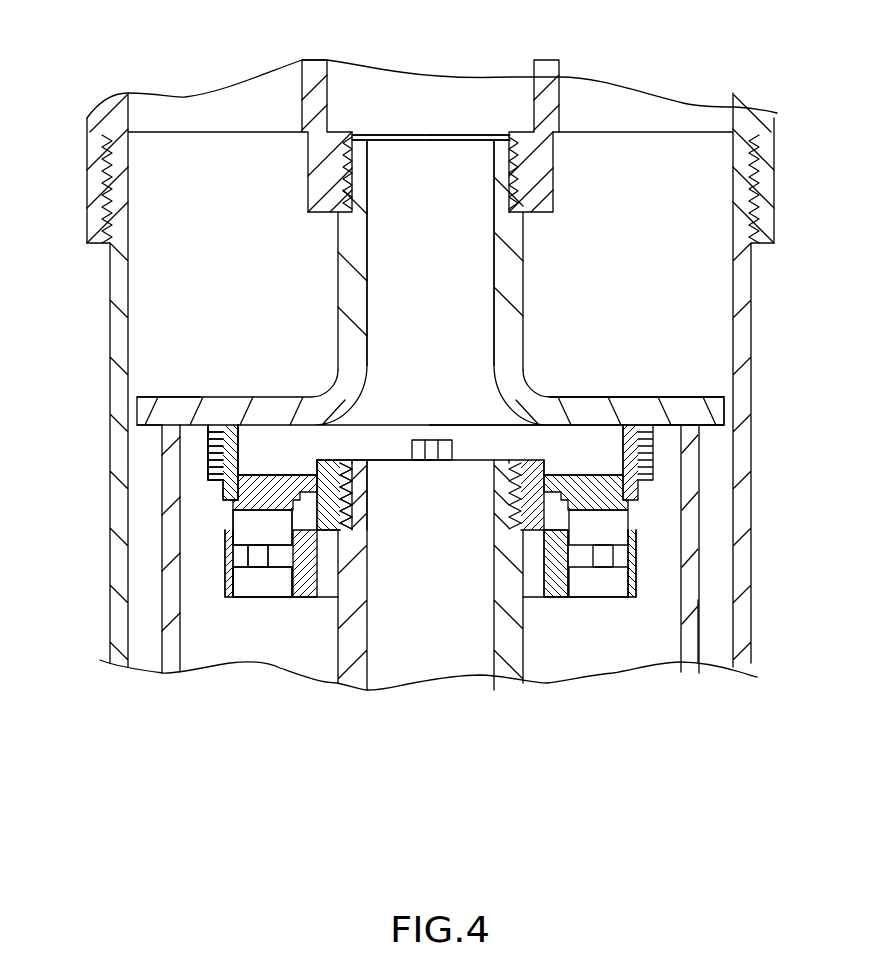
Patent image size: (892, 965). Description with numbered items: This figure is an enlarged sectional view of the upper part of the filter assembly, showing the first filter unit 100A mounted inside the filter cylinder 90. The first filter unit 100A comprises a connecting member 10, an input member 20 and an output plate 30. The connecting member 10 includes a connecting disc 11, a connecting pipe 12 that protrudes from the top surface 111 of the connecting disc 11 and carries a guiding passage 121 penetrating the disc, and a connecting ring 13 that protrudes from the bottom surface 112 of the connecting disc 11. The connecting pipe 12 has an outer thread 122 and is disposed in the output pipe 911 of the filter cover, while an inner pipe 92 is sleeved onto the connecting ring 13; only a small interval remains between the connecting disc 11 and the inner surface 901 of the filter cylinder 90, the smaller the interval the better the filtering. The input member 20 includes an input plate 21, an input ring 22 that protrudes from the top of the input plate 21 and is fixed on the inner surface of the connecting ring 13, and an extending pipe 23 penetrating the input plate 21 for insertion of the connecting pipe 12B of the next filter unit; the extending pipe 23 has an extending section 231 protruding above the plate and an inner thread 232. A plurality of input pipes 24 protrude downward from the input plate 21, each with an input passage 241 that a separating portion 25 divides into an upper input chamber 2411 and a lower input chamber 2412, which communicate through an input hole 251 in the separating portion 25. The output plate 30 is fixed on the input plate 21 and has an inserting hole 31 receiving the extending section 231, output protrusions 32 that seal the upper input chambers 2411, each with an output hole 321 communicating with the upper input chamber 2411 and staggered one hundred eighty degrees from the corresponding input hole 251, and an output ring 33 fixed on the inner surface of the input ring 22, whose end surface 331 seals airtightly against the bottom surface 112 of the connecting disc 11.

The connecting member 10 is at (557, 378).
The connecting disc 11 is at (690, 398).
The top surface 111 is at (633, 397).
The bottom surface 112 is at (713, 427).
The connecting pipe 12 is at (343, 232).
The guiding passage 121 is at (450, 168).
The outer thread 122 is at (382, 133).
The connecting pipe of another filter unit 12B is at (363, 492).
The connecting ring 13 is at (682, 468).
The input member 20 is at (214, 563).
The input plate 21 is at (243, 553).
The input ring 22 is at (215, 465).
The extending pipe 23 is at (323, 518).
The extending section 231 is at (337, 478).
The inner thread 232 is at (352, 468).
The input pipe 24 is at (238, 588).
The input passage 241 is at (193, 747).
The upper input chamber 2411 is at (273, 535).
The lower input chamber 2412 is at (250, 585).
The separating portion 25 is at (590, 565).
The input hole 251 is at (227, 538).
The output plate 30 is at (262, 462).
The inserting hole 31 is at (310, 478).
The output protrusion 32 is at (240, 500).
The output hole 321 is at (280, 483).
The output ring 33 is at (212, 478).
The end surface 331 is at (227, 462).
The filter cylinder 90 is at (750, 307).
The inner surface 901 is at (735, 250).
The output pipe 911 is at (313, 157).
The inner pipe 92 is at (692, 630).
The first filter unit 100A is at (150, 388).